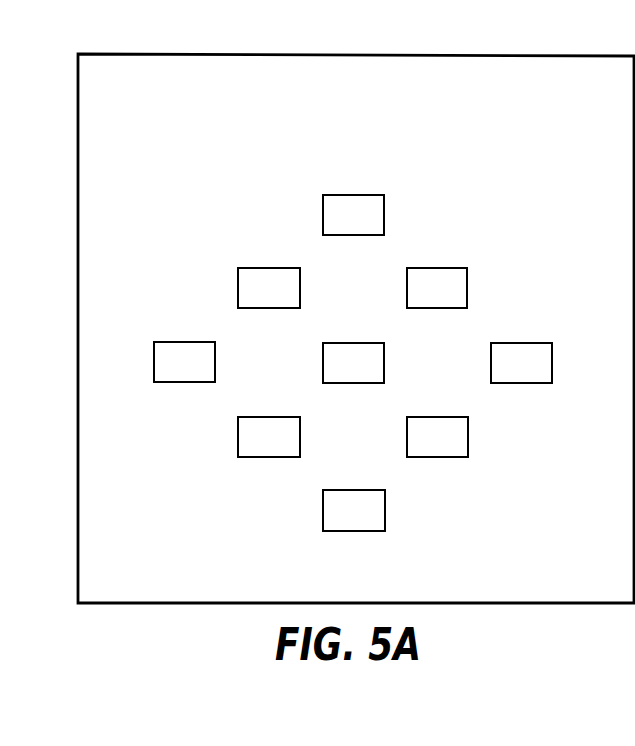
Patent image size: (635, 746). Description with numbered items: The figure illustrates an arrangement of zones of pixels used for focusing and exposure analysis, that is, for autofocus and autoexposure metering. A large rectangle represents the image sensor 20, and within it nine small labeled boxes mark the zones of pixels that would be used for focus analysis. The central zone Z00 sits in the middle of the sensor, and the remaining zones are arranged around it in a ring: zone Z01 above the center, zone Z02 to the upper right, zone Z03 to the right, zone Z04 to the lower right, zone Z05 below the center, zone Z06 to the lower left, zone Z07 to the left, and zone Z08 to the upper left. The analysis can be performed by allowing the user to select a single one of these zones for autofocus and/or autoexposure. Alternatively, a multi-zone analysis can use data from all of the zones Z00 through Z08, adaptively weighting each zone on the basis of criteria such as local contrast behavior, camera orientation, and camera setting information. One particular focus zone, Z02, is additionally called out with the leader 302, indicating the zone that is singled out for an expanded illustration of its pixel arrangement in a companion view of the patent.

The image sensor 20 is at (357, 54).
The focus zone Z02 302 is at (485, 252).
The zone Z00 is at (353, 363).
The zone Z01 is at (353, 215).
The focus zone Z02 is at (437, 288).
The zone Z03 is at (521, 363).
The zone Z04 is at (437, 437).
The zone Z05 is at (354, 510).
The zone Z06 is at (269, 437).
The zone Z07 is at (184, 362).
The zone Z08 is at (269, 288).